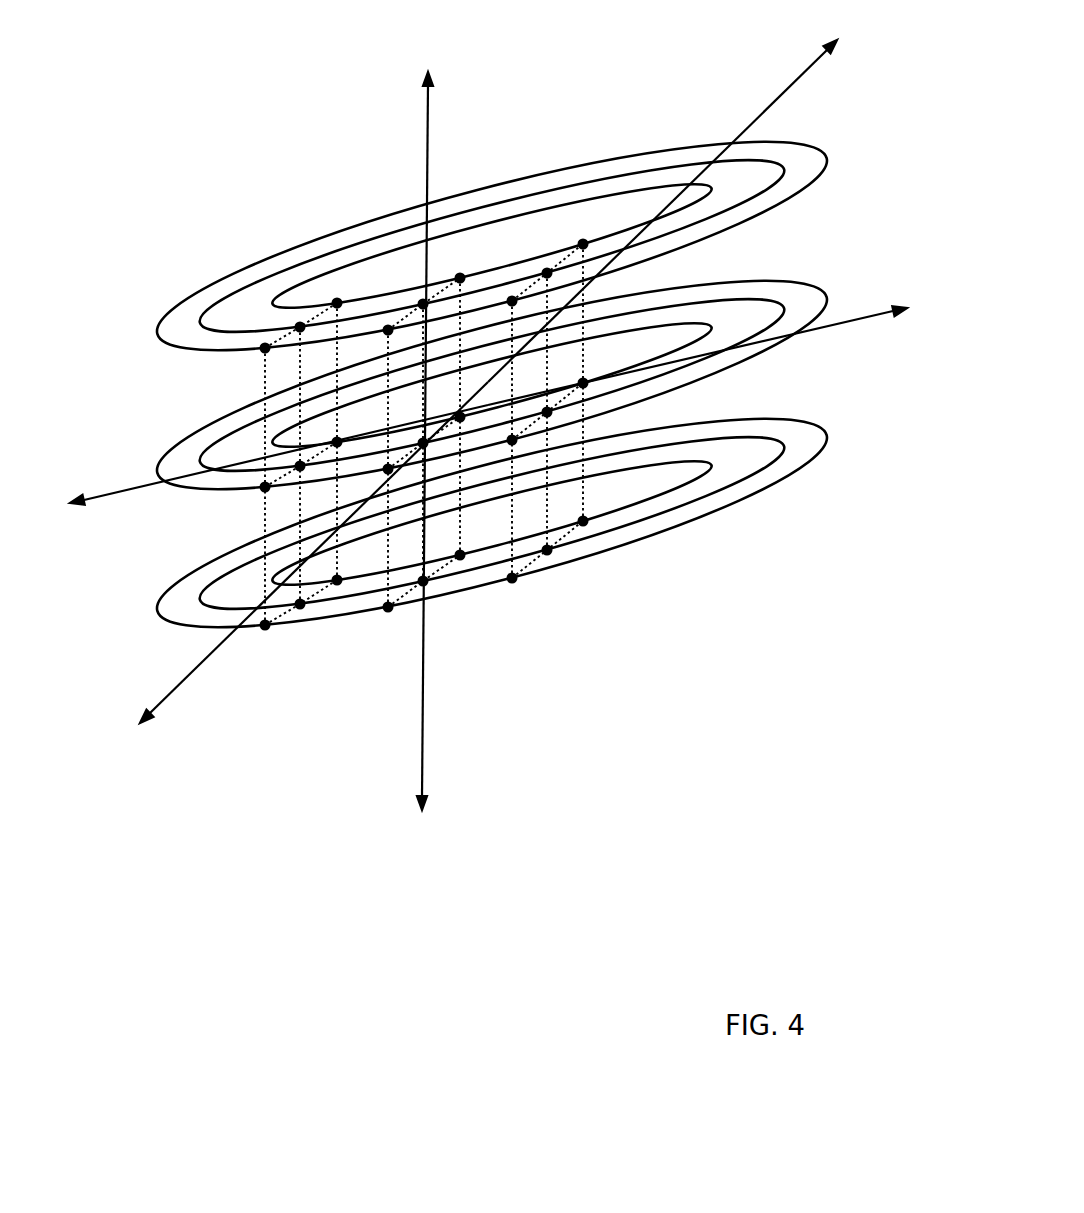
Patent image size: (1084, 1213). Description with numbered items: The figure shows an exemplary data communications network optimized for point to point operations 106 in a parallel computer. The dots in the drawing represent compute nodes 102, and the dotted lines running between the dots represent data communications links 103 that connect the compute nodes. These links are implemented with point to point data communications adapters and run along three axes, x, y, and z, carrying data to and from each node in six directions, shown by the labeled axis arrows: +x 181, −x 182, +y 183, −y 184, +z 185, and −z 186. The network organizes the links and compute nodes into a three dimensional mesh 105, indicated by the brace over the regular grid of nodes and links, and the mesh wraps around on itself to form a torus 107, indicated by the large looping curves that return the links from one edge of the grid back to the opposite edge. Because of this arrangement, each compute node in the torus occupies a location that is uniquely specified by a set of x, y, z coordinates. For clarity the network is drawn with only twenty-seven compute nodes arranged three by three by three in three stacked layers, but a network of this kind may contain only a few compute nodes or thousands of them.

The compute nodes 102 is at (512, 578).
The data communications links 103 is at (262, 381).
The three dimensional mesh 105 is at (449, 468).
The data communications network optimized for point to point operations 106 is at (476, 584).
The torus 107 is at (245, 244).
The +x direction 181 is at (943, 343).
The −x direction 182 is at (70, 536).
The +y direction 183 is at (882, 68).
The −y direction 184 is at (135, 776).
The +z direction 185 is at (447, 63).
The −z direction 186 is at (442, 876).